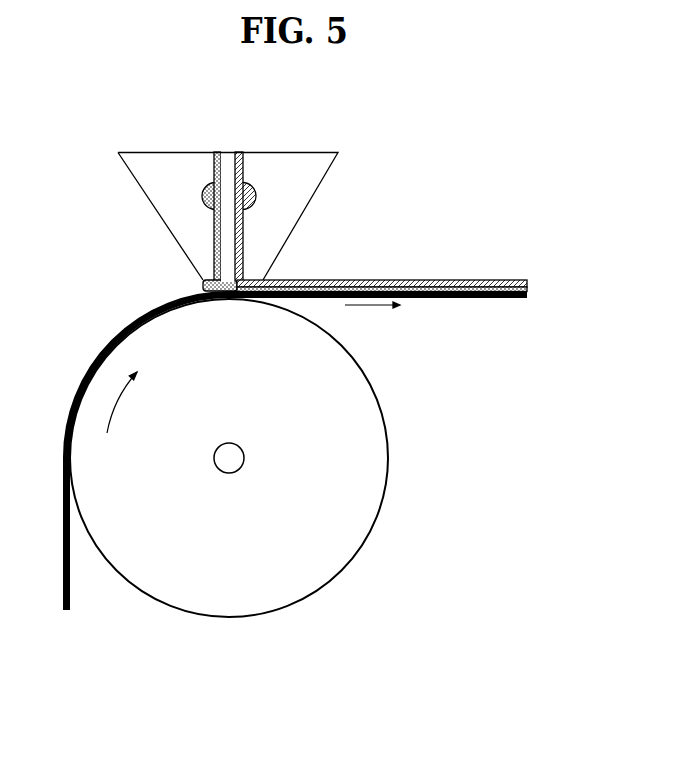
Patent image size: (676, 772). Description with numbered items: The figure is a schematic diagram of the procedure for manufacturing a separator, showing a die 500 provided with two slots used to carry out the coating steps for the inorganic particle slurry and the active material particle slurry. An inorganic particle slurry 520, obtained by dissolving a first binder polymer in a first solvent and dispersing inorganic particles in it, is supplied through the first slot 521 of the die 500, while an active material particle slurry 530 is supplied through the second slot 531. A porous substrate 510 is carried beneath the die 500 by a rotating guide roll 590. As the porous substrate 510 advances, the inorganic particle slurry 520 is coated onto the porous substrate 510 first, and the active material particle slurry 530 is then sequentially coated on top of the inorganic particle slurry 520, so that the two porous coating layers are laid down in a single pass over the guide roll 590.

The die 500 is at (352, 140).
The porous substrate 510 is at (457, 298).
The inorganic particle slurry 520 is at (365, 282).
The first slot 521 is at (210, 155).
The active material particle slurry 530 is at (308, 280).
The second slot 531 is at (250, 155).
The guide roll 590 is at (386, 441).